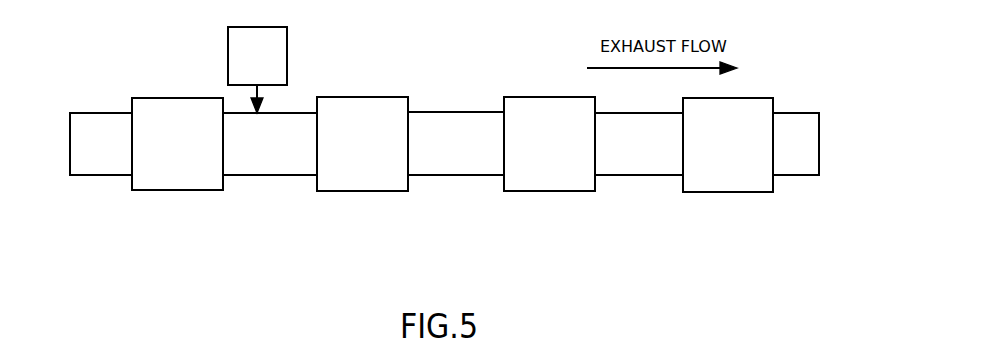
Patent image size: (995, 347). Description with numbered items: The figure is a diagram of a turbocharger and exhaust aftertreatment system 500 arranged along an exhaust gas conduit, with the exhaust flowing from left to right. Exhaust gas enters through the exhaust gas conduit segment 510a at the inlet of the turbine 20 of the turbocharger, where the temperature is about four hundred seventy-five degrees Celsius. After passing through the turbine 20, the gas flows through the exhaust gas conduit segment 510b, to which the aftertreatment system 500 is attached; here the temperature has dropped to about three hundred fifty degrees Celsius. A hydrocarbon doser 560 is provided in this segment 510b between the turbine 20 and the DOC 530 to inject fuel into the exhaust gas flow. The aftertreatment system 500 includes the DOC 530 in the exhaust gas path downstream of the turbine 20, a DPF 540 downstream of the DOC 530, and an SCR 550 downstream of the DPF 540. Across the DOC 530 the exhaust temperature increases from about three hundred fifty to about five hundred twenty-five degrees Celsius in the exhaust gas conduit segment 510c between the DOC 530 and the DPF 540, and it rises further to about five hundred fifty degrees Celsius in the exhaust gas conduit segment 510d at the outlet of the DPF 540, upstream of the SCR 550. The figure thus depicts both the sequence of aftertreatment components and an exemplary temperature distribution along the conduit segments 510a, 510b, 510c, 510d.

The exhaust aftertreatment system 500 is at (433, 163).
The turbine 20 is at (167, 163).
The hydrocarbon (HC) doser 560 is at (243, 75).
The DOC 530 is at (348, 163).
The DPF 540 is at (535, 163).
The SCR 550 is at (714, 163).
The exhaust gas conduit segment 510a is at (113, 113).
The exhaust gas conduit segment 510b is at (268, 175).
The exhaust gas conduit segment 510c is at (472, 112).
The exhaust gas conduit segment 510d is at (660, 175).